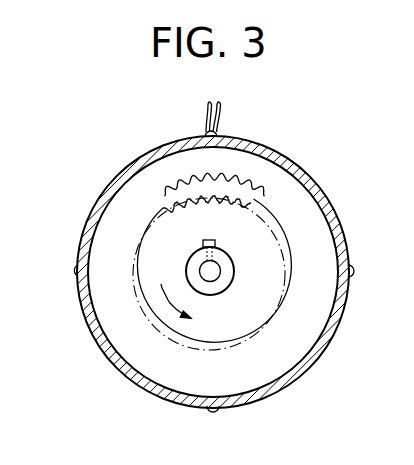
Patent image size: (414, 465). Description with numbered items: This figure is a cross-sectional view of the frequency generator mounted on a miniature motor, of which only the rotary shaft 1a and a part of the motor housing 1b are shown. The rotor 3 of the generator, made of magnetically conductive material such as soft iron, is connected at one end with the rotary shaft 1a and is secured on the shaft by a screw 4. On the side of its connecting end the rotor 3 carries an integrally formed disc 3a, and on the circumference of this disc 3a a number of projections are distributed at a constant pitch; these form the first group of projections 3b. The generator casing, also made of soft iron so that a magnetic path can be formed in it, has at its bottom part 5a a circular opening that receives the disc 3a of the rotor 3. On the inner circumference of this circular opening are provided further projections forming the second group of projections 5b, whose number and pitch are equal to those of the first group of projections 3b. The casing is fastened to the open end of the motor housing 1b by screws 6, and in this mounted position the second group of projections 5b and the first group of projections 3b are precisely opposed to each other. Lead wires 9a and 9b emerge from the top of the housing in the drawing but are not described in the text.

The rotary shaft 1a is at (210, 271).
The motor housing 1b is at (310, 183).
The rotor 3 is at (235, 273).
The disc 3a is at (170, 279).
The first group of projections 3b is at (202, 206).
The screw 4 is at (216, 244).
The bottom part of the casing 5a is at (124, 279).
The second group of projections 5b is at (192, 184).
The screws 6 is at (219, 135).
The lead wire 9a is at (207, 105).
The lead wire 9b is at (220, 108).